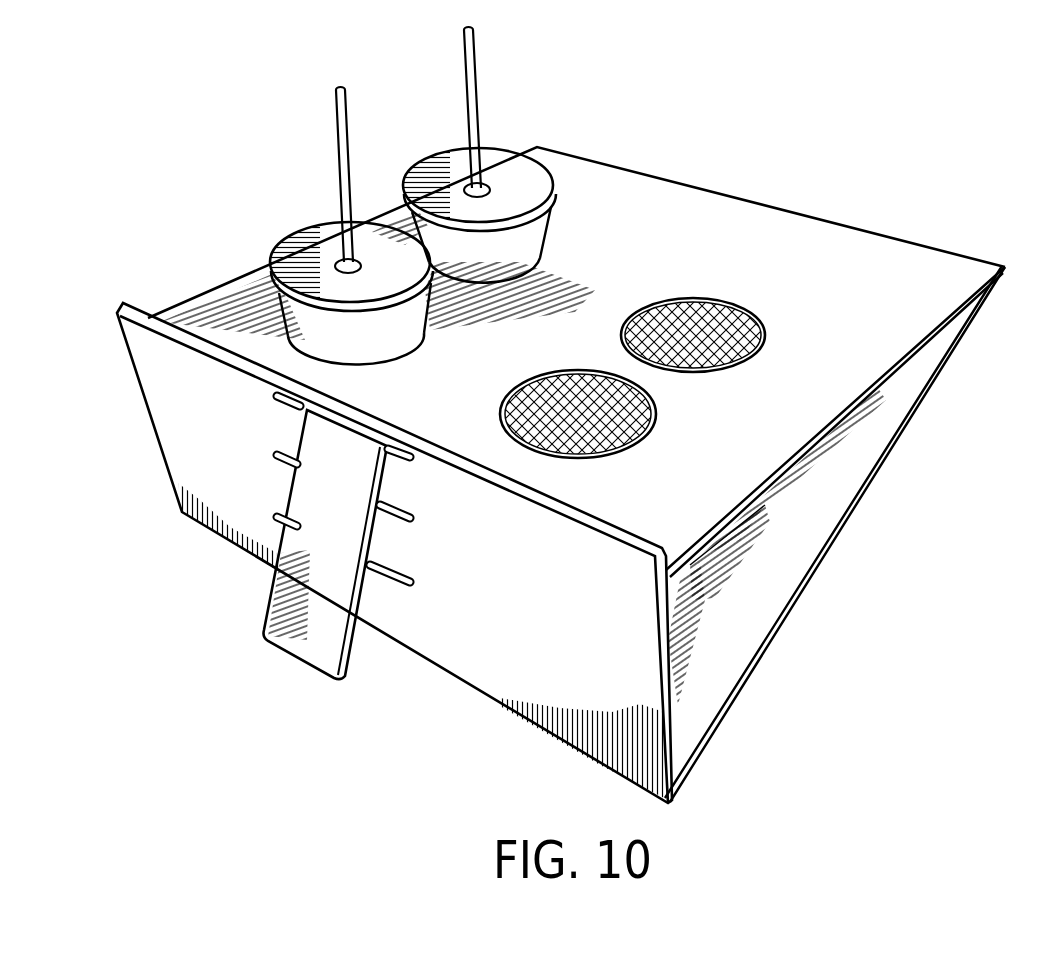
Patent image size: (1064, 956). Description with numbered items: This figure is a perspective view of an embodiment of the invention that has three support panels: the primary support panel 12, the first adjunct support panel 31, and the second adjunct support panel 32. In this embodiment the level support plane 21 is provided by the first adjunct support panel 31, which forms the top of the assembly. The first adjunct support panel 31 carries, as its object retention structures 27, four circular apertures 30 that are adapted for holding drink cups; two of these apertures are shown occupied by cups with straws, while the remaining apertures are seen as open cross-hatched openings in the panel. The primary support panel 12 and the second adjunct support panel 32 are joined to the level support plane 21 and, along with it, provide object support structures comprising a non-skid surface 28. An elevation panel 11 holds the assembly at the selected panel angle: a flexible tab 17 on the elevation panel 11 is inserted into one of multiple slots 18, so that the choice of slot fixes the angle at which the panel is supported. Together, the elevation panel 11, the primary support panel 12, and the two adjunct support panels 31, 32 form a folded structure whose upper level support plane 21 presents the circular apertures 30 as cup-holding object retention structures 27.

The elevation panel 11 is at (598, 657).
The primary support panel 12 is at (852, 526).
The flexible tab 17 is at (312, 618).
The slots 18 is at (397, 460).
The level support plane 21 is at (576, 243).
The object retention structure 27 is at (794, 406).
The non-skid surface 28 is at (688, 568).
The circular apertures 30 is at (562, 258).
The first adjunct support panel 31 is at (895, 311).
The second adjunct support panel 32 is at (750, 618).